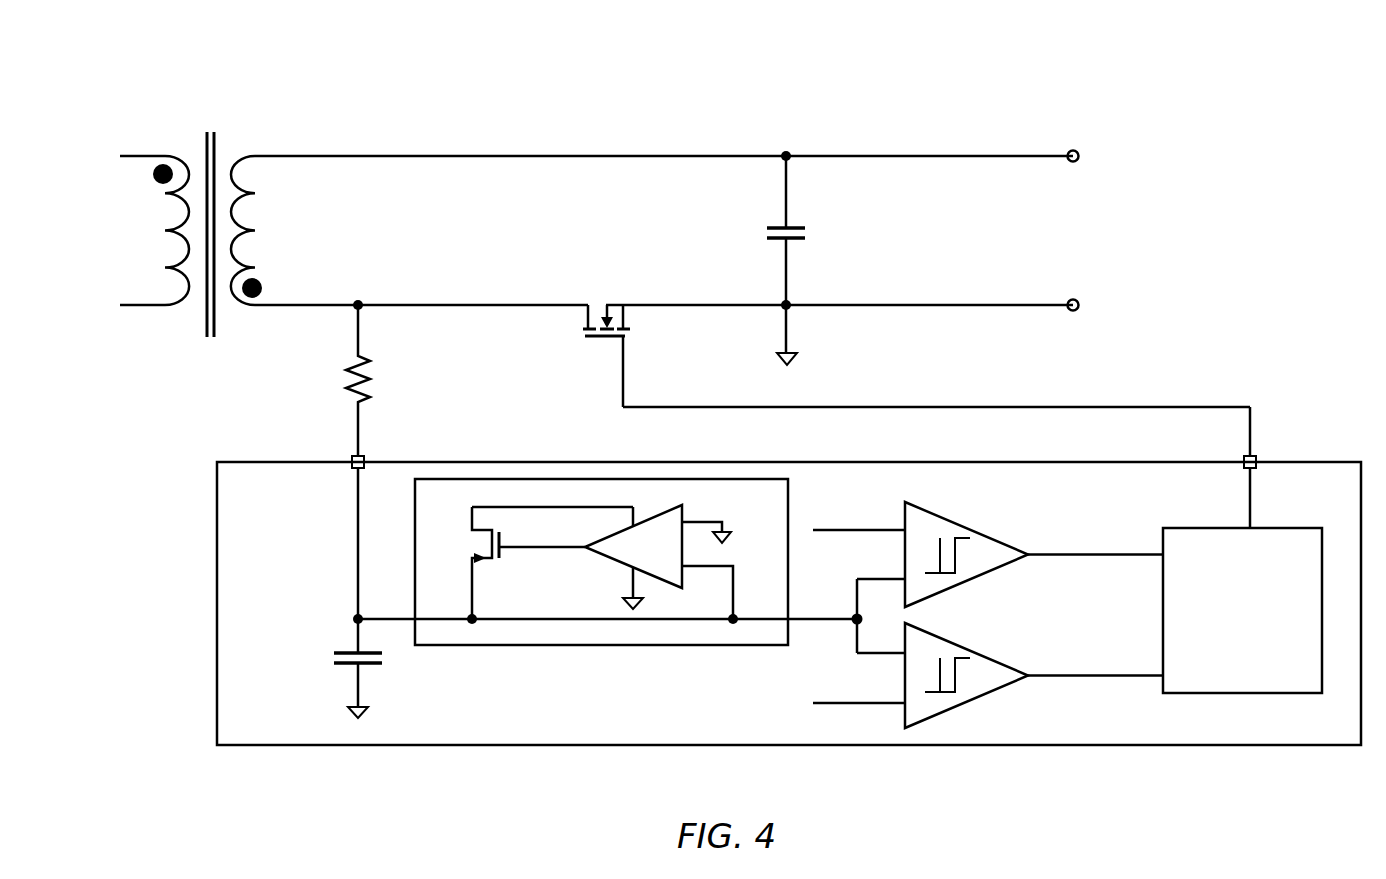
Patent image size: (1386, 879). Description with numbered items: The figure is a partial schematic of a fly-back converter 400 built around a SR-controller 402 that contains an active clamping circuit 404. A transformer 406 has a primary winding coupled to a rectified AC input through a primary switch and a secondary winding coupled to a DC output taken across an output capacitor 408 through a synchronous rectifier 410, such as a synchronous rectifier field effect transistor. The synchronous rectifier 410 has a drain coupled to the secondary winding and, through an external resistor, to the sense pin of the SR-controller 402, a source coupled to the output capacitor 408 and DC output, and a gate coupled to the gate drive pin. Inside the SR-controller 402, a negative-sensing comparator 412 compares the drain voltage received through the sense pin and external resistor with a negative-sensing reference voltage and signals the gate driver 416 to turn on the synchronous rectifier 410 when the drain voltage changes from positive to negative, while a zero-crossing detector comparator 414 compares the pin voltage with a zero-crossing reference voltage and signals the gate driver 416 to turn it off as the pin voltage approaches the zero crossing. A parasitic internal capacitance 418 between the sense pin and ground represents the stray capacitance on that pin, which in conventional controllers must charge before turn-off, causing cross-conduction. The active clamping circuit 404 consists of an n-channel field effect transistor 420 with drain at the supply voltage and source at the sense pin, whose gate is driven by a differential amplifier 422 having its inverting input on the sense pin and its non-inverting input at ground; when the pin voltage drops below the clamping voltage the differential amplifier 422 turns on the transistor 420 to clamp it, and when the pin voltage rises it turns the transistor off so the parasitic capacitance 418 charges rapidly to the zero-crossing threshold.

The fly-back converter 400 is at (723, 17).
The SR-controller 402 is at (660, 721).
The active clamping circuit 404 is at (777, 505).
The transformer 406 is at (247, 122).
The output capacitor 408 is at (782, 228).
The synchronous rectifier 410 is at (598, 298).
The negative-sensing comparator 412 is at (958, 642).
The zero-crossing detector comparator 414 is at (958, 520).
The gate driver 416 is at (1262, 665).
The parasitic internal capacitance 418 is at (352, 651).
The n-channel field effect transistor 420 is at (468, 545).
The differential amplifier 422 is at (666, 558).